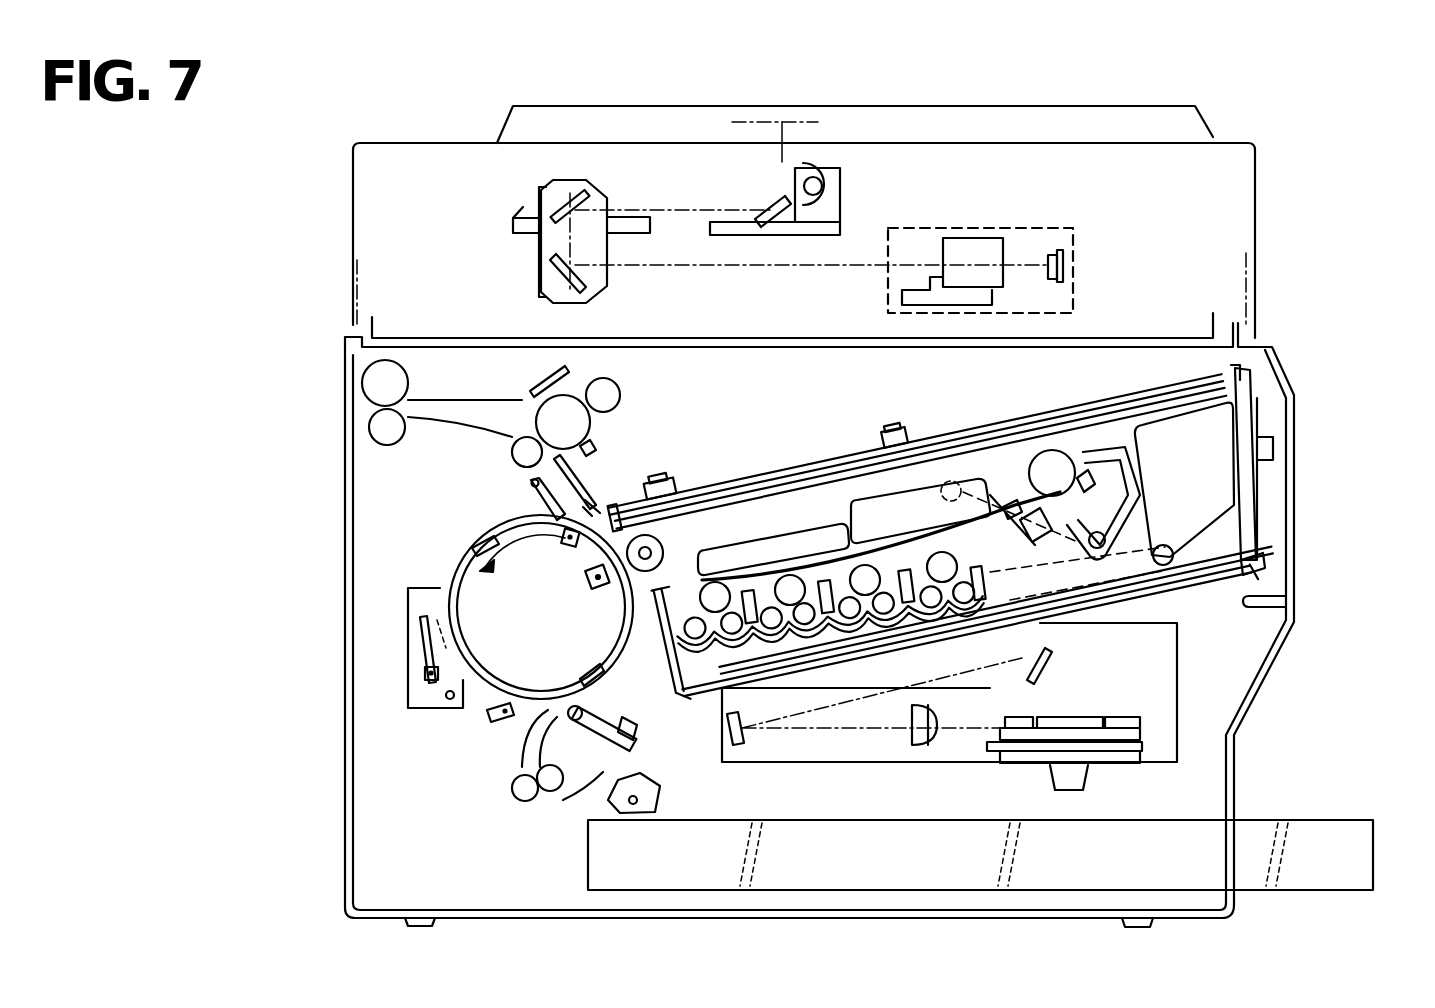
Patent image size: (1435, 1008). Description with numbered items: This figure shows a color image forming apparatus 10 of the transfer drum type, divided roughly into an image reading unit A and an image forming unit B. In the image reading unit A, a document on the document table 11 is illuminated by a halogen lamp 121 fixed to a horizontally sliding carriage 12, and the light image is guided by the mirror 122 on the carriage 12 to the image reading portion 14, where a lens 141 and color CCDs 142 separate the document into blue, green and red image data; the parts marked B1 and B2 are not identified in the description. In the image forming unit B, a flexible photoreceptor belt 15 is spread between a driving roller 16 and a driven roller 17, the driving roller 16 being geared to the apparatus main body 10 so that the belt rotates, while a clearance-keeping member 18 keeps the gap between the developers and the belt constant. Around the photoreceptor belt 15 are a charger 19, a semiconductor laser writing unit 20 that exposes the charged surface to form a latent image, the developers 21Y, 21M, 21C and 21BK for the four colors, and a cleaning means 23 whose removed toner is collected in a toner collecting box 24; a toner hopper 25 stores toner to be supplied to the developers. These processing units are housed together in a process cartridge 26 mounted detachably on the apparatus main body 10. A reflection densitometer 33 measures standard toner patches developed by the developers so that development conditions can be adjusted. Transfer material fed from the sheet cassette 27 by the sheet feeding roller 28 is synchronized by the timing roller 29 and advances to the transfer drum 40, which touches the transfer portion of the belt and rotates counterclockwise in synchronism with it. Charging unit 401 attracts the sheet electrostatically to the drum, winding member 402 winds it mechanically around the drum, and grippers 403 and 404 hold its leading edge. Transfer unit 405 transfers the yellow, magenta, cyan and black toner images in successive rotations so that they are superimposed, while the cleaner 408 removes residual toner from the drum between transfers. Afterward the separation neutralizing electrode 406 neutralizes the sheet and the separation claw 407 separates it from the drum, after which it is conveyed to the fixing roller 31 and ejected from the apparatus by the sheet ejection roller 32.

The apparatus main body 10 is at (1292, 193).
The document table 11 is at (950, 118).
The carriage 12 is at (832, 222).
The halogen lamp 121 is at (795, 178).
The mirror 122 is at (760, 228).
The image reading portion 14 is at (1025, 228).
The lens 141 is at (953, 238).
The color CCDs 142 is at (1067, 250).
The photoreceptor belt 15 is at (850, 462).
The driving roller 16 is at (682, 597).
The driven roller 17 is at (1052, 450).
The clearance-keeping member 18 is at (800, 533).
The charging means 19 is at (1010, 547).
The semiconductor laser writing unit 20 is at (1177, 690).
The developer 21BK is at (703, 583).
The developer 21C is at (790, 575).
The developer 21M is at (865, 565).
The developer 21Y is at (942, 552).
The cleaning means 23 is at (1110, 465).
The toner collecting box 24 is at (968, 480).
The toner hopper 25 is at (1220, 530).
The process cartridge 26 is at (1258, 503).
The sheet cassette 27 is at (1338, 820).
The sheet feeding roller 28 is at (665, 797).
The timing roller 29 is at (577, 847).
The fixing roller 31 is at (512, 450).
The sheet ejection roller 32 is at (372, 430).
The reflection densitometer 33 is at (732, 482).
The transfer drum 40 is at (452, 572).
The charging unit 401 is at (497, 725).
The winding member 402 is at (622, 708).
The gripper 403 is at (582, 670).
The gripper 404 is at (476, 545).
The transfer unit 405 is at (590, 577).
The separation neutralizing electrode 406 is at (597, 505).
The separation claw 407 is at (528, 503).
The cleaner 408 is at (410, 660).
The image reading unit A is at (397, 230).
The image forming unit B is at (548, 282).
The first mirror B1 is at (586, 210).
The second mirror B2 is at (600, 275).